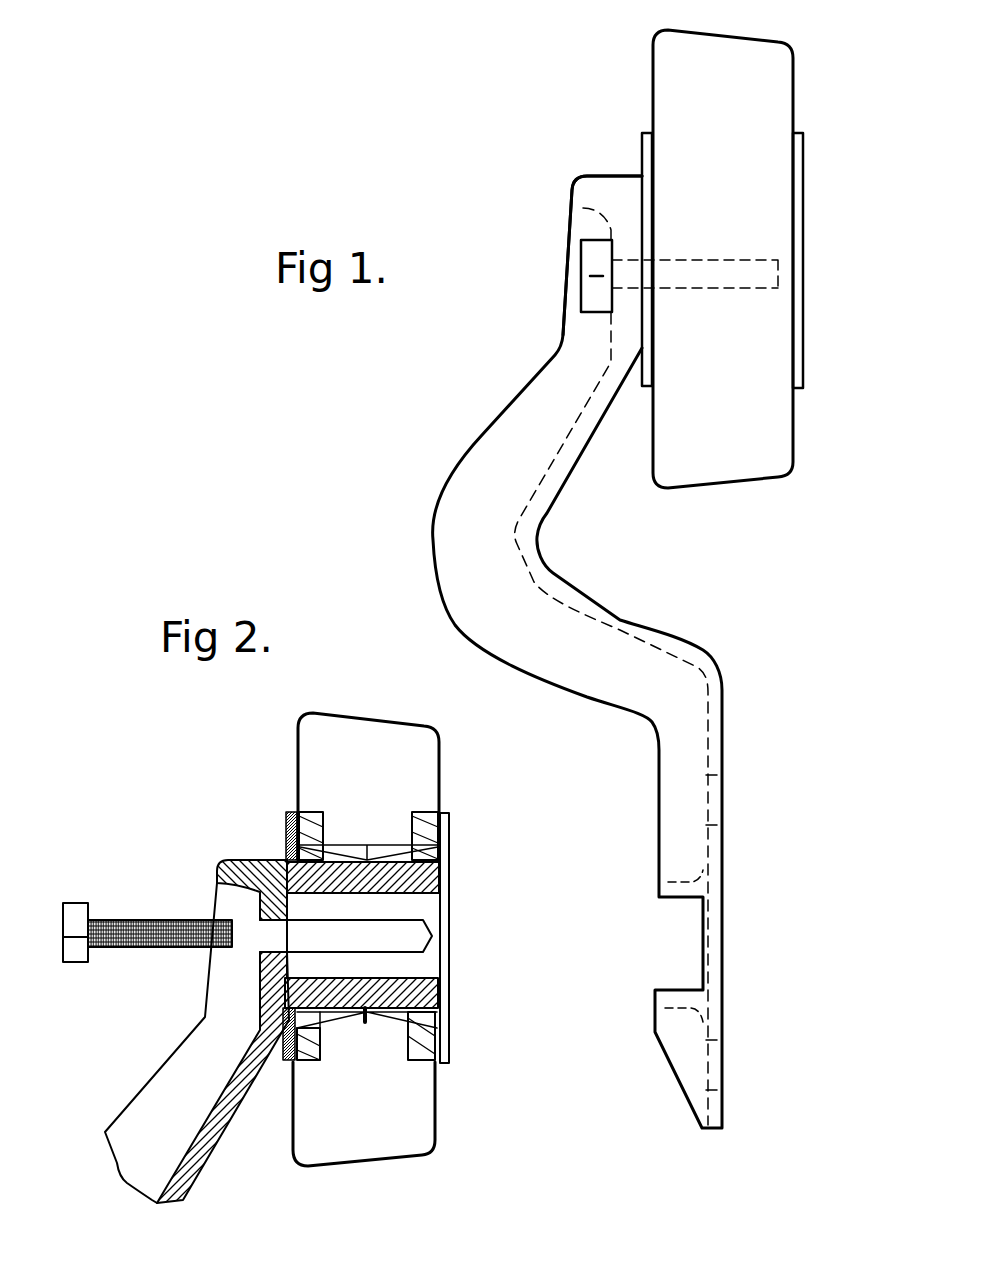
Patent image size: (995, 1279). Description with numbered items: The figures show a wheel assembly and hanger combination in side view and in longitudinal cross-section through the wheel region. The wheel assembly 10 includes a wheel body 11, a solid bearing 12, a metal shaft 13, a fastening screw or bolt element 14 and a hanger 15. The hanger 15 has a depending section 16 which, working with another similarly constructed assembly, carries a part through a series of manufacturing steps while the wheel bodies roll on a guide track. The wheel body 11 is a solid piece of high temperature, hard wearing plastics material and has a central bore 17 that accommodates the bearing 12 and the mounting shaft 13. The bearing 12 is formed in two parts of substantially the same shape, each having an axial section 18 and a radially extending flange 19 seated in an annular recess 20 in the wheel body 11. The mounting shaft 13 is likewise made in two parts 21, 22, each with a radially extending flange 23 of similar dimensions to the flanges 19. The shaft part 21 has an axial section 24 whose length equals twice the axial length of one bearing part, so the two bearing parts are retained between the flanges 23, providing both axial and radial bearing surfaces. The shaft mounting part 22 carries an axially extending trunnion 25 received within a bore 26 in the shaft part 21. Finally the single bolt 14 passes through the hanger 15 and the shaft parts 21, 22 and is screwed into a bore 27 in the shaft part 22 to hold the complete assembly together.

In FIG. 1, the wheel assembly 10 is at (810, 418).
In FIG. 1, the wheel body 11 is at (722, 410).
In FIG. 2, the wheel body 11 is at (418, 772).
In FIG. 2, the solid bearing 12 is at (333, 852).
In FIG. 2, the metal shaft 13 is at (456, 997).
In FIG. 1, the fastening screw or bolt element 14 is at (580, 303).
In FIG. 2, the fastening screw or bolt element 14 is at (128, 920).
In FIG. 1, the hanger 15 is at (572, 193).
In FIG. 1, the depending section 16 is at (723, 745).
In FIG. 2, the depending section 16 is at (212, 1153).
In FIG. 2, the central bore 17 is at (400, 1026).
In FIG. 2, the axial section 18 is at (392, 843).
In FIG. 2, the radially extending flange 19 is at (427, 850).
In FIG. 2, the annular recess 20 is at (308, 1060).
In FIG. 2, the shaft part 21 is at (345, 1018).
In FIG. 2, the shaft mounting part 22 is at (352, 905).
In FIG. 1, the radially extending flange 23 is at (646, 130).
In FIG. 2, the radially extending flange 23 is at (288, 813).
In FIG. 2, the axial section 24 is at (287, 837).
In FIG. 2, the axially extending trunnion 25 is at (320, 957).
In FIG. 2, the bore 26 is at (402, 980).
In FIG. 2, the bore 27 is at (380, 922).